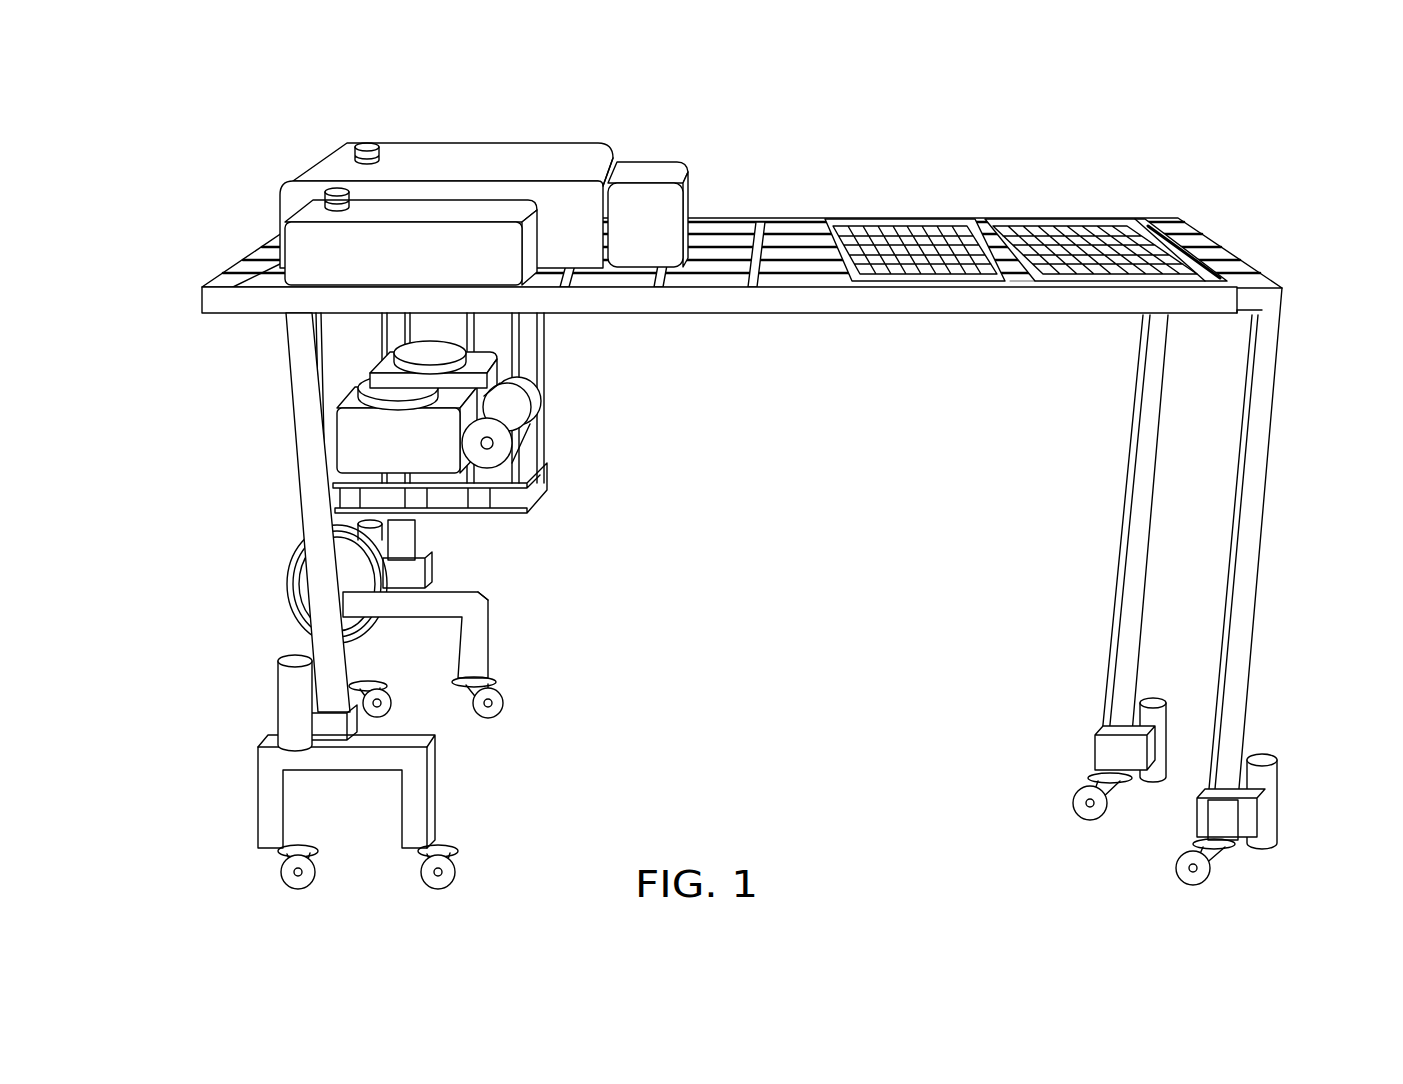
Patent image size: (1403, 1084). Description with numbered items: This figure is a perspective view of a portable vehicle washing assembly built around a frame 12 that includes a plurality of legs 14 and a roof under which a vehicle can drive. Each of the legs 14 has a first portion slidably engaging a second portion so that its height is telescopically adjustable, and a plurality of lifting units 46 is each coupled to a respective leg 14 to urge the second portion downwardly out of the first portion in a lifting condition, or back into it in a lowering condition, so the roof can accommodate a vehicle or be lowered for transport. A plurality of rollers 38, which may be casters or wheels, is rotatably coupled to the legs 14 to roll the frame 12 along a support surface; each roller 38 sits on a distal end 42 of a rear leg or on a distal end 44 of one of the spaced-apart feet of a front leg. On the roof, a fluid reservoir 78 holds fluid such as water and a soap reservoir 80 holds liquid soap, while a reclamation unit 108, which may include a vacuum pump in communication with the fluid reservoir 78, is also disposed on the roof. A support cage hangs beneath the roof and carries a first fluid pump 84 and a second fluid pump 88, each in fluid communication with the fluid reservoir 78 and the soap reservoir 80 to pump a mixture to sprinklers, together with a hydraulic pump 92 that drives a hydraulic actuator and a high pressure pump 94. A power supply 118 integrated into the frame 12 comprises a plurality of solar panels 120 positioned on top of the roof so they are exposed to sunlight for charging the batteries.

The frame 12 is at (1293, 286).
The legs 14 is at (298, 448).
The rollers 38 is at (300, 888).
The distal end 42 is at (1215, 843).
The distal end 44 is at (283, 852).
The lifting units 46 is at (292, 692).
The fluid reservoir 78 is at (414, 141).
The soap reservoir 80 is at (312, 199).
The first fluid pump 84 is at (493, 456).
The second fluid pump 88 is at (555, 403).
The hydraulic pump 92 is at (383, 366).
The high pressure pump 94 is at (350, 405).
The reclamation unit 108 is at (678, 176).
The power supply 118 is at (1033, 178).
The solar panels 120 is at (924, 226).